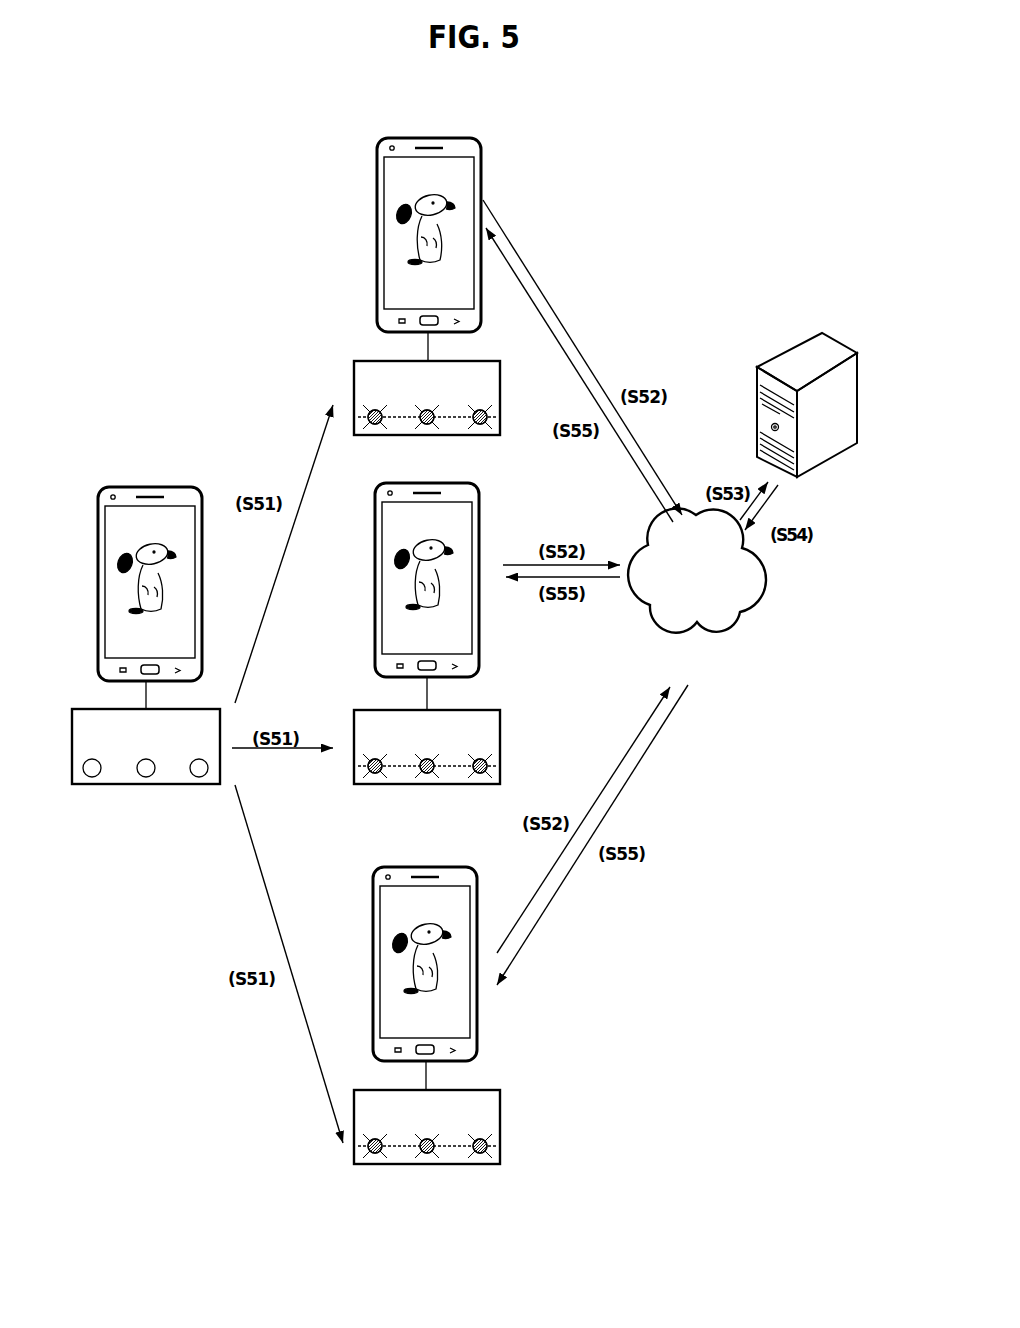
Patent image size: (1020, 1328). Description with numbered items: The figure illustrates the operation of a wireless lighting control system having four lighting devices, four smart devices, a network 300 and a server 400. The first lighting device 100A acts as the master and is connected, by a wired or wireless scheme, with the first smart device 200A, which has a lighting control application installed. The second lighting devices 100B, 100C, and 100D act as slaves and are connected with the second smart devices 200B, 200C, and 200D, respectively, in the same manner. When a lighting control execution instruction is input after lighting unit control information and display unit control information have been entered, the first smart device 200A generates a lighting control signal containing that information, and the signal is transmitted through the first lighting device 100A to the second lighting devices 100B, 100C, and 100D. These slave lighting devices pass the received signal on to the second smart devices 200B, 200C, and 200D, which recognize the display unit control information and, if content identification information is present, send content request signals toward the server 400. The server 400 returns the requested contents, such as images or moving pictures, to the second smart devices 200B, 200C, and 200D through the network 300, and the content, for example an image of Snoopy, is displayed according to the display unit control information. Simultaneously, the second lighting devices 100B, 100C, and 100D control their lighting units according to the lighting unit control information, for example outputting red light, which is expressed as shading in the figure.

The first lighting device 100A is at (126, 784).
The second lighting device 100B is at (354, 370).
The second lighting device 100C is at (500, 737).
The second lighting device 100D is at (500, 1118).
The first smart device 200A is at (142, 487).
The second smart device 200B is at (377, 200).
The second smart device 200C is at (430, 483).
The second smart device 200D is at (412, 867).
The network 300 is at (697, 570).
The server 400 is at (805, 333).